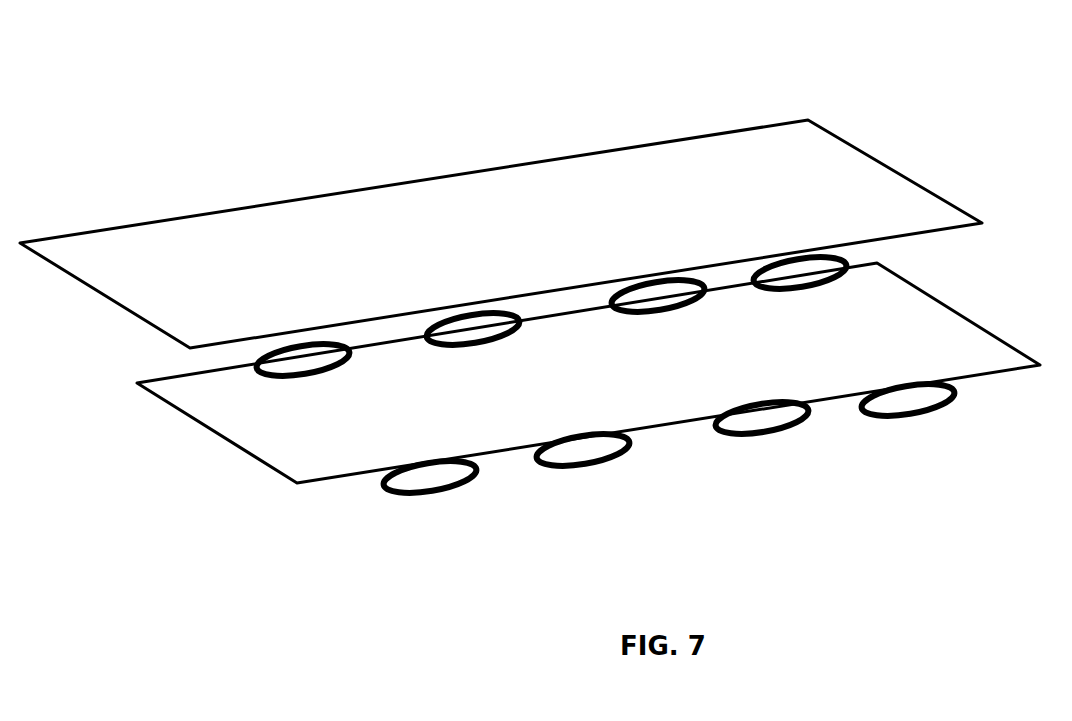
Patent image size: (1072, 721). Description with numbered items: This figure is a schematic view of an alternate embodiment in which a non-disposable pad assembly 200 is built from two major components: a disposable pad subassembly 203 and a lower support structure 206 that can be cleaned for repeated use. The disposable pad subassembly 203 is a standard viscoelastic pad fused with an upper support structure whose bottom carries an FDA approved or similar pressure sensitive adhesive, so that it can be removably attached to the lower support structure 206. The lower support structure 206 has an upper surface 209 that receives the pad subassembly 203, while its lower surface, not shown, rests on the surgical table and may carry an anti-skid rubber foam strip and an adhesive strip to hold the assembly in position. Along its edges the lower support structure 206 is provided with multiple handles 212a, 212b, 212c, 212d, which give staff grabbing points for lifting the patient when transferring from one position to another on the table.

The non-disposable pad assembly 200 is at (494, 106).
The disposable pad subassembly 203 is at (808, 168).
The lower support structure 206 is at (907, 322).
The upper surface 209 is at (595, 392).
The handle 212a is at (434, 475).
The handle 212b is at (588, 448).
The handle 212c is at (766, 416).
The handle 212d is at (912, 398).